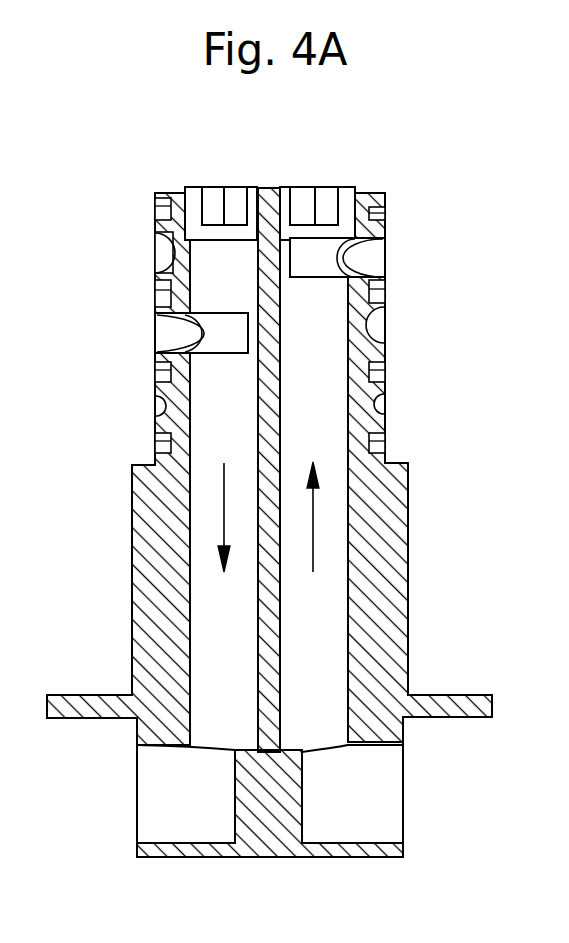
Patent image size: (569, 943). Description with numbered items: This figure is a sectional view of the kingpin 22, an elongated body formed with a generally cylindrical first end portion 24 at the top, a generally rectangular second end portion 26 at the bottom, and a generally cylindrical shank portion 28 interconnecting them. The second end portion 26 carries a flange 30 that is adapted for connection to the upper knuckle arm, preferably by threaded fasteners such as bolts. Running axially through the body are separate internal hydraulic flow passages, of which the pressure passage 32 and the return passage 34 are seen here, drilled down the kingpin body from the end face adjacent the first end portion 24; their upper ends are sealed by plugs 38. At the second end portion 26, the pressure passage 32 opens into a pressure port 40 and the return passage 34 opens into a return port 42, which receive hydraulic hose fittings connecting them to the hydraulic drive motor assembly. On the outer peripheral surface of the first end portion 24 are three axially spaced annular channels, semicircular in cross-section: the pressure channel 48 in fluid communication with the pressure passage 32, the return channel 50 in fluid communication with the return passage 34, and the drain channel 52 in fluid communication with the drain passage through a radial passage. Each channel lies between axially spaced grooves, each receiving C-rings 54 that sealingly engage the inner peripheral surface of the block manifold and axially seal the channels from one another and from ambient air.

The kingpin 22 is at (410, 492).
The first end portion 24 is at (388, 380).
The second end portion 26 is at (402, 730).
The shank portion 28 is at (147, 652).
The flange 30 is at (470, 698).
The pressure passage 32 is at (213, 590).
The return passage 34 is at (332, 578).
The plug 38 is at (218, 196).
The pressure port 40 is at (147, 793).
The return port 42 is at (392, 793).
The pressure channel 48 is at (374, 330).
The return channel 50 is at (156, 250).
The drain channel 52 is at (386, 402).
The C-ring 54 is at (383, 212).